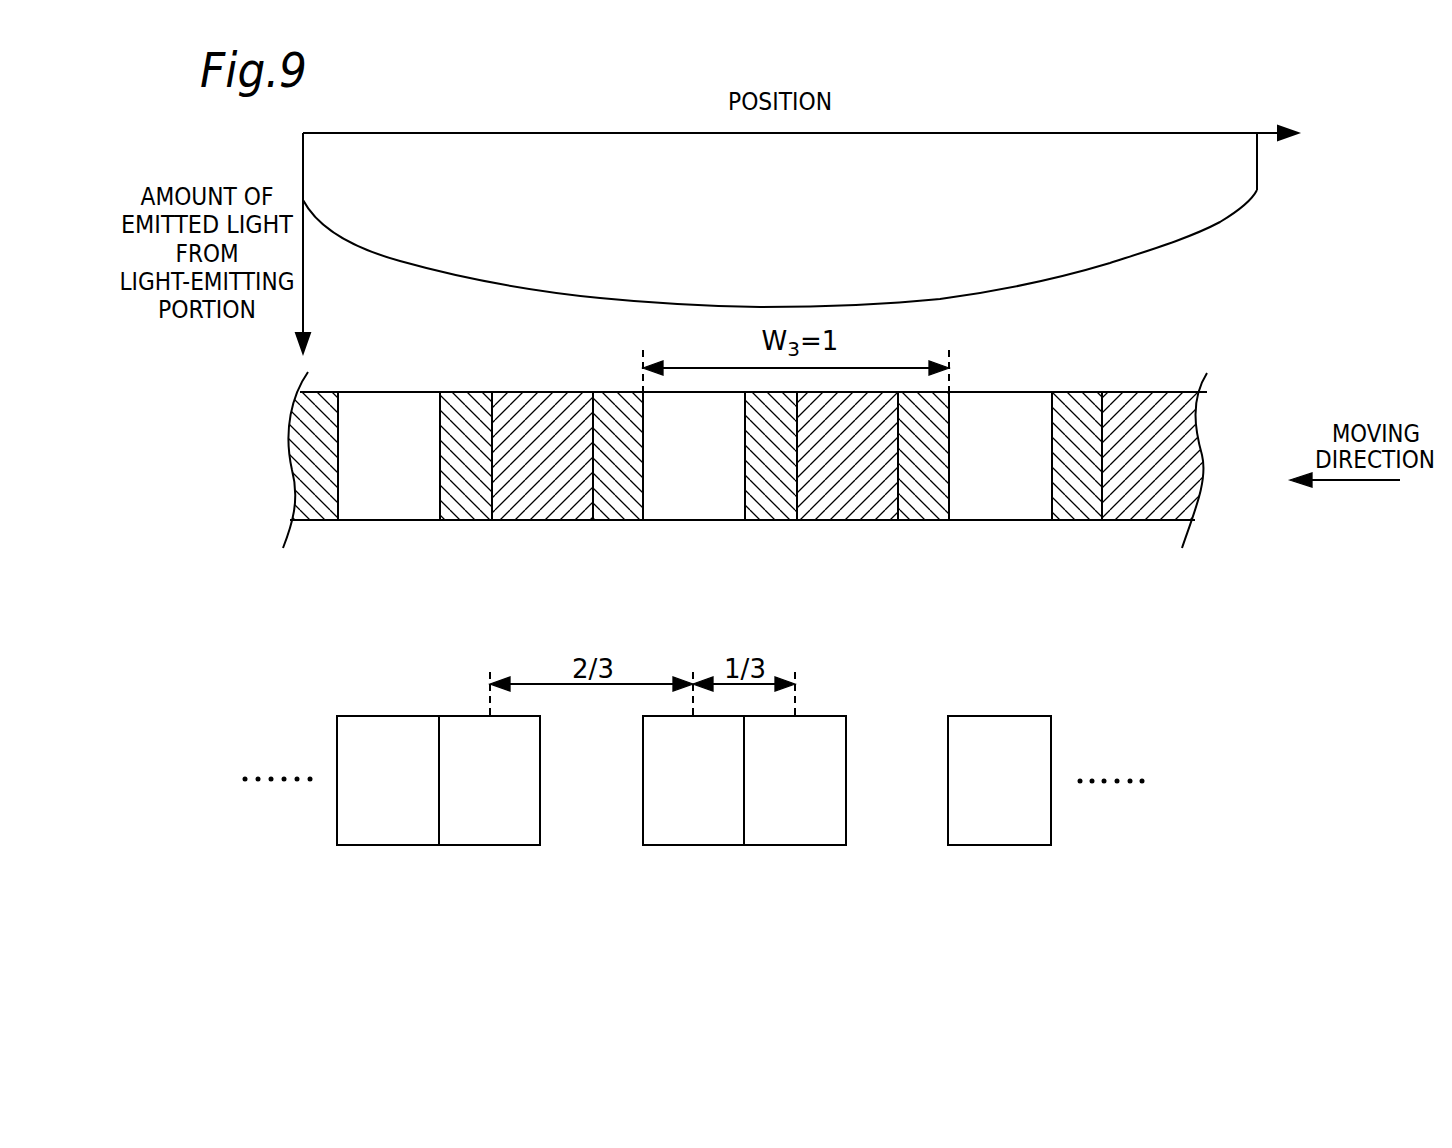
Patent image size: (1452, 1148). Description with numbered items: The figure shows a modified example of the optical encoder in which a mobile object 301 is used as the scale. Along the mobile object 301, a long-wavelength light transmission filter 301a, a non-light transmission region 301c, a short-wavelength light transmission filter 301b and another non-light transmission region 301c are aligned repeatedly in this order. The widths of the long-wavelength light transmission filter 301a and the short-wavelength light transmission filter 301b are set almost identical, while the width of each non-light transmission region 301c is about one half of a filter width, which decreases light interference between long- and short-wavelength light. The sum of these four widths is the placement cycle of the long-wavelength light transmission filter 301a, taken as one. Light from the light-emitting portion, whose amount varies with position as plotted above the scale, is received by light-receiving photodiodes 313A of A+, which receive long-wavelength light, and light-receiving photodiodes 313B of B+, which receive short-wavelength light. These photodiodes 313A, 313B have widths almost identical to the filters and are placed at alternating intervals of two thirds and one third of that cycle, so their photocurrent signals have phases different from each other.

The mobile object 301 is at (468, 388).
The long-wavelength light transmission filter 301a is at (1003, 417).
The non-light transmission region 301c is at (1075, 418).
The short-wavelength light transmission filter 301b is at (1158, 418).
The light-receiving photodiodes of A+ 313A is at (385, 846).
The light-receiving photodiodes of B+ 313B is at (487, 846).